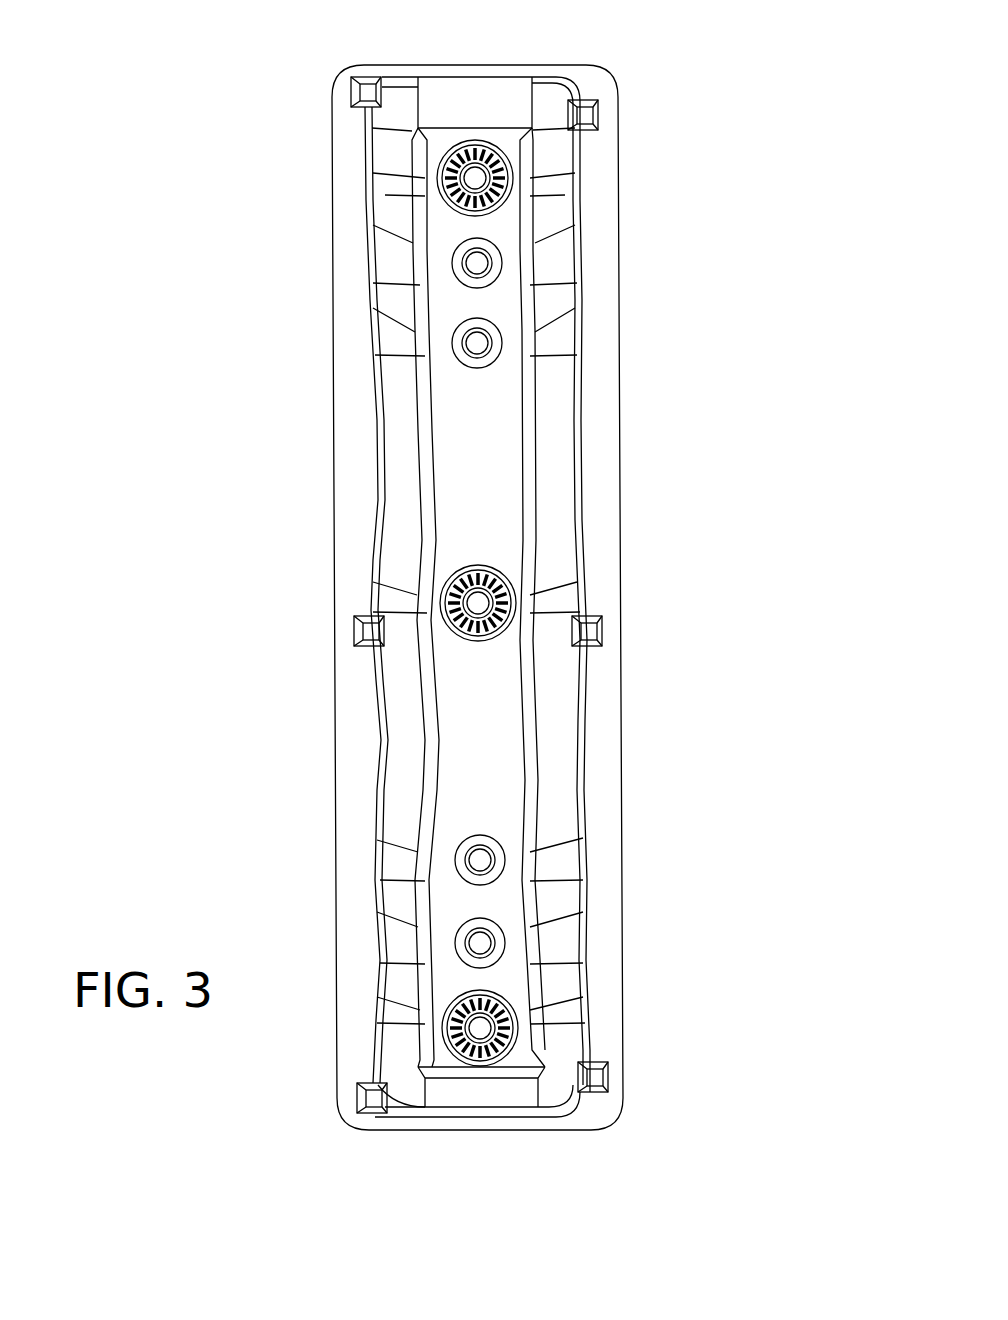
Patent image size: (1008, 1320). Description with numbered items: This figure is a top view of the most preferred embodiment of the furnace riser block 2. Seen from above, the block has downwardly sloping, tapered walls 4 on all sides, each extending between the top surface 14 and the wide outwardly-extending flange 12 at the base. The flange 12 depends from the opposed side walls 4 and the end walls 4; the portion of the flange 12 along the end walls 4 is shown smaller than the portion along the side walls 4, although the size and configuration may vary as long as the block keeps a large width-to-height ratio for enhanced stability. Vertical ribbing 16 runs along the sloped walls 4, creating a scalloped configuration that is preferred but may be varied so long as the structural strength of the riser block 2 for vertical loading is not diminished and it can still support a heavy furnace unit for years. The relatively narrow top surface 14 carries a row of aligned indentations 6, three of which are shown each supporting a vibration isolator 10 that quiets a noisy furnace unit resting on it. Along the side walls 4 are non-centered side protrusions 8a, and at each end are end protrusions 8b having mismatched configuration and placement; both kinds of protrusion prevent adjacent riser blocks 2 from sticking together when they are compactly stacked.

The furnace riser block 2 is at (168, 81).
The vertically-extending and sloped/tapered wall 4 is at (366, 434).
The indentation 6 is at (531, 269).
The non-centered side protrusion 8a is at (331, 633).
The end protrusion 8b is at (629, 1080).
The vibration isolator 10 is at (541, 180).
The outwardly-extending flange 12 is at (631, 777).
The top surface 14 is at (523, 462).
The vertical ribbing 16 is at (366, 864).